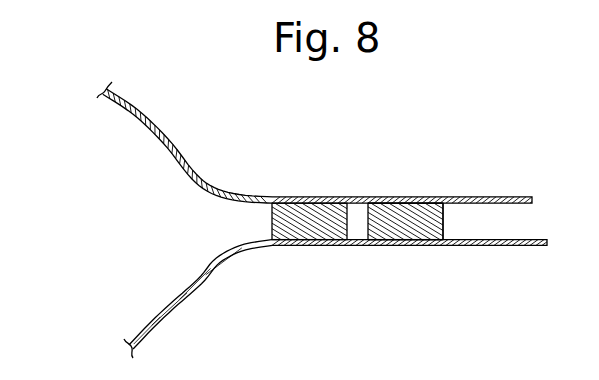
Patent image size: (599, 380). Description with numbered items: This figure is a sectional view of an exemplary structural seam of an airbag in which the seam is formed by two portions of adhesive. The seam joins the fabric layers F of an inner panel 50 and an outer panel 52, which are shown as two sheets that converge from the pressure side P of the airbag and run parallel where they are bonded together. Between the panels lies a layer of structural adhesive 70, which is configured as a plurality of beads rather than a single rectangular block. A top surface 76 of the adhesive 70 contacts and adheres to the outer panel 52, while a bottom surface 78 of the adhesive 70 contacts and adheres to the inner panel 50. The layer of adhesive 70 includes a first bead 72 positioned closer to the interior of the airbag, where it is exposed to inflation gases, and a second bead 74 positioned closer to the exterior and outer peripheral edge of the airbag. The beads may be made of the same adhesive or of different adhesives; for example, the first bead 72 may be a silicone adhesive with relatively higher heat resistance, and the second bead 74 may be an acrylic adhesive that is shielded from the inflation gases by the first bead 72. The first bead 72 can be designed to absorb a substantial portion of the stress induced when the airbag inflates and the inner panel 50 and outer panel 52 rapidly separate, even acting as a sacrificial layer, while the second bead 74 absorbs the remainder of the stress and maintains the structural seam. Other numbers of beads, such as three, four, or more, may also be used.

The inner panel 50 is at (160, 329).
The outer panel 52 is at (149, 114).
The layer of structural adhesive 70 is at (456, 222).
The first bead 72 is at (311, 208).
The second bead 74 is at (378, 225).
The top surface 76 is at (410, 193).
The bottom surface 78 is at (422, 250).
The pressure side P is at (79, 156).
The fabric layers F is at (158, 152).